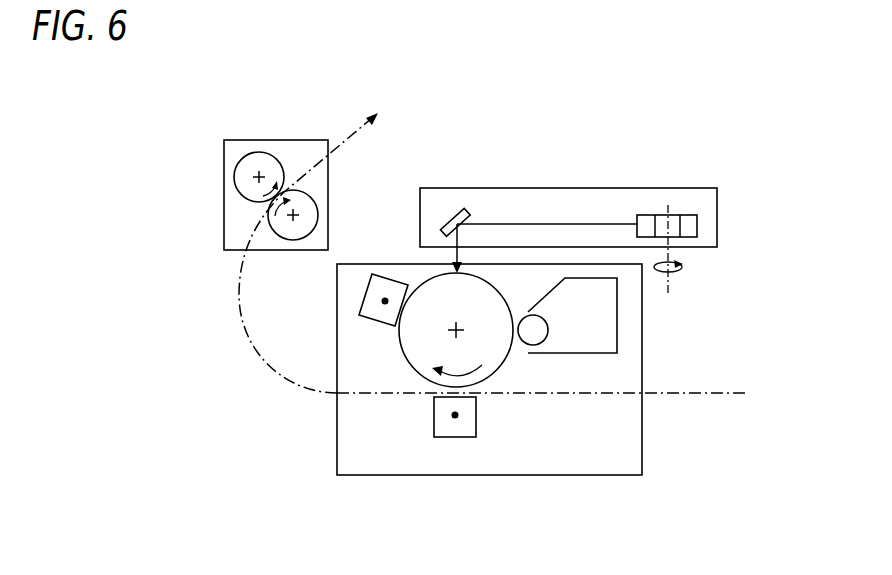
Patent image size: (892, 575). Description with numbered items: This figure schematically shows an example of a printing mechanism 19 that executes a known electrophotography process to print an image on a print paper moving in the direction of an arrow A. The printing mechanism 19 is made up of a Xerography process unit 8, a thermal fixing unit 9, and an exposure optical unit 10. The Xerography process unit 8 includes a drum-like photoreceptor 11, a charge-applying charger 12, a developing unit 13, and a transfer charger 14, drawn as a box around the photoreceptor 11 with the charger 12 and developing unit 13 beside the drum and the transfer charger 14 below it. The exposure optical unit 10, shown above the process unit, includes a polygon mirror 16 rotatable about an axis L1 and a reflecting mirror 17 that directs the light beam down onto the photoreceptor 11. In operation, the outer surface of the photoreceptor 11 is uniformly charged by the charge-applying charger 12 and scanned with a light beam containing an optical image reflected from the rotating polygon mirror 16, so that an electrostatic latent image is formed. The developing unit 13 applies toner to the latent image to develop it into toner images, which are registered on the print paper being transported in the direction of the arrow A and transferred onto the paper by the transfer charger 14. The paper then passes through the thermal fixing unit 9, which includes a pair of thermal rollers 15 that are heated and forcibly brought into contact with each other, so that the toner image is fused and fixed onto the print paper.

The Xerography process unit 8 is at (415, 488).
The thermal fixing unit 9 is at (218, 232).
The exposure optical unit 10 is at (578, 185).
The photoreceptor 11 is at (500, 368).
The charge-applying charger 12 is at (378, 323).
The developing unit 13 is at (617, 333).
The transfer charger 14 is at (453, 437).
The thermal rollers 15 is at (305, 205).
The polygon mirror 16 is at (695, 224).
The reflecting mirror 17 is at (445, 214).
The printing mechanism 19 is at (523, 145).
The axis L1 is at (672, 283).
The arrow A is at (554, 388).